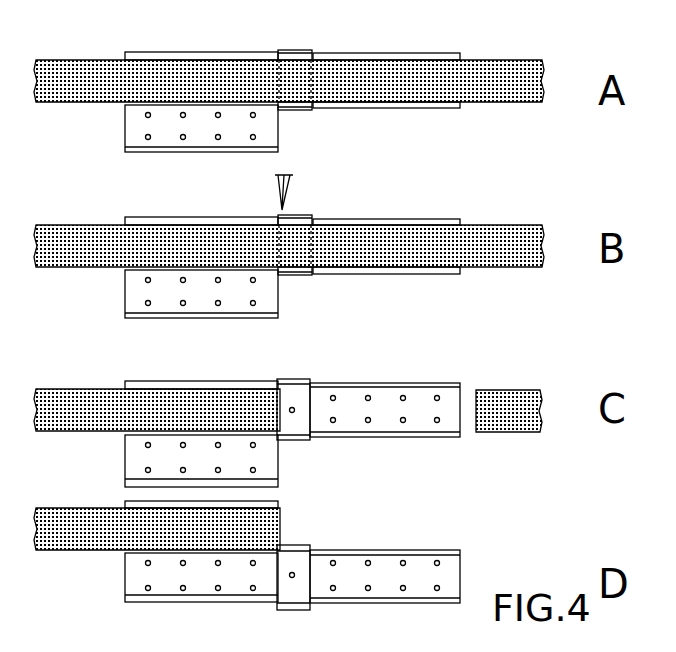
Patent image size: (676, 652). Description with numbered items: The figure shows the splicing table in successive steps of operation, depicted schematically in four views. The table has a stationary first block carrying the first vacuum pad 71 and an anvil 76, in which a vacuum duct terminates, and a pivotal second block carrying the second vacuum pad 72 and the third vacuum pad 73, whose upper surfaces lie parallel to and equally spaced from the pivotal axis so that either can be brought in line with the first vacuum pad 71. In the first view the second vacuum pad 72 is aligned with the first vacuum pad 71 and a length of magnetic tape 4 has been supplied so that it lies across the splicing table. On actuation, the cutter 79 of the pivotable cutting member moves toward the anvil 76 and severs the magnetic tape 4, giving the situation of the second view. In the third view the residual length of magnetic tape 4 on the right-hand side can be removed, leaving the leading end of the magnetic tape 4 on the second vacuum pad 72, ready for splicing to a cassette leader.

In FIG. 4A, the magnetic tape 4 is at (500, 94).
In FIG. 4B, the magnetic tape 4 is at (505, 258).
In FIG. 4C, the magnetic tape 4 is at (58, 415).
In FIG. 4D, the magnetic tape 4 is at (57, 540).
In FIG. 4A, the first vacuum pad 71 is at (379, 53).
In FIG. 4B, the first vacuum pad 71 is at (379, 219).
In FIG. 4C, the first vacuum pad 71 is at (372, 383).
In FIG. 4D, the first vacuum pad 71 is at (375, 550).
In FIG. 4A, the second vacuum pad 72 is at (192, 52).
In FIG. 4B, the second vacuum pad 72 is at (165, 217).
In FIG. 4C, the second vacuum pad 72 is at (164, 381).
In FIG. 4D, the second vacuum pad 72 is at (270, 501).
In FIG. 4A, the third vacuum pad 73 is at (135, 124).
In FIG. 4B, the third vacuum pad 73 is at (135, 293).
In FIG. 4C, the third vacuum pad 73 is at (135, 458).
In FIG. 4D, the third vacuum pad 73 is at (135, 578).
In FIG. 4A, the anvil 76 is at (295, 80).
In FIG. 4B, the anvil 76 is at (292, 262).
In FIG. 4C, the anvil 76 is at (287, 396).
In FIG. 4D, the anvil 76 is at (292, 559).
In FIG. 4B, the cutter 79 is at (290, 194).